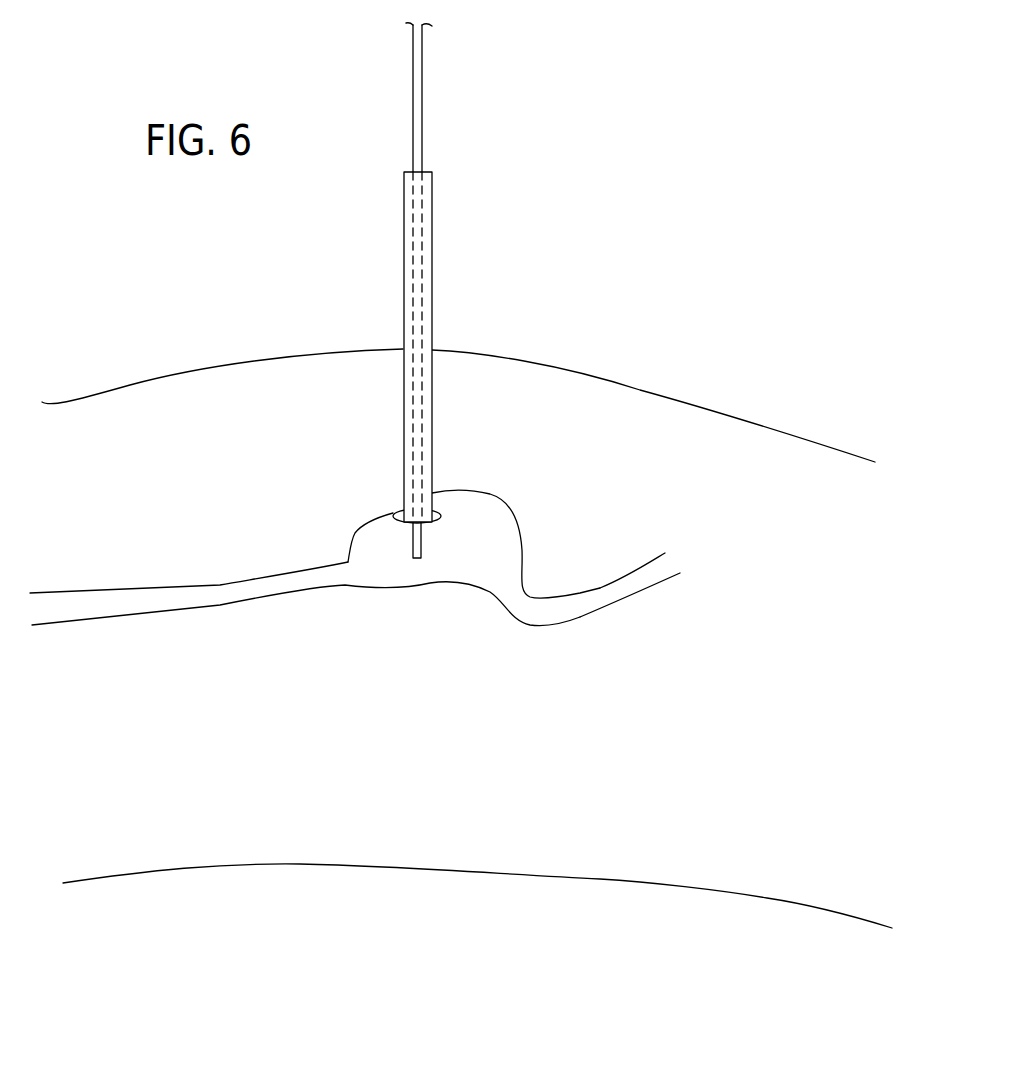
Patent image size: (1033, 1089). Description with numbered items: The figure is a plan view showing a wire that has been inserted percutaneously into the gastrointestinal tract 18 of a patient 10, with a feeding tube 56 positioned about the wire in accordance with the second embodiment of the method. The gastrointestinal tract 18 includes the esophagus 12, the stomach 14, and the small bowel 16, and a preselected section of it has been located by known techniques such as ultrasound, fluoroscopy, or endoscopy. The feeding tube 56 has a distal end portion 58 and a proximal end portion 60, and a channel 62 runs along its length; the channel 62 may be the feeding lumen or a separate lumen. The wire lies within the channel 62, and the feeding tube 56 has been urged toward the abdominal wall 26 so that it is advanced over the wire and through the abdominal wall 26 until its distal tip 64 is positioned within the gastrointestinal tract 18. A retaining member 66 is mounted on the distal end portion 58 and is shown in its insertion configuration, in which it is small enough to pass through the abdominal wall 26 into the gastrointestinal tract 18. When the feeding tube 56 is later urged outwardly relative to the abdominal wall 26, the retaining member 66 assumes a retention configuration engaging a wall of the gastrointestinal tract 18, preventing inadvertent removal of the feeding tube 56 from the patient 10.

The patient 10 is at (840, 447).
The esophagus 12 is at (137, 588).
The stomach 14 is at (510, 509).
The small bowel 16 is at (617, 577).
The gastrointestinal tract 18 is at (175, 612).
The abdominal wall 26 is at (380, 348).
The feeding tube 56 is at (432, 307).
The distal end portion 58 is at (433, 487).
The proximal end portion 60 is at (432, 196).
The channel 62 is at (424, 250).
The distal tip 64 is at (427, 523).
The retaining member 66 is at (398, 514).